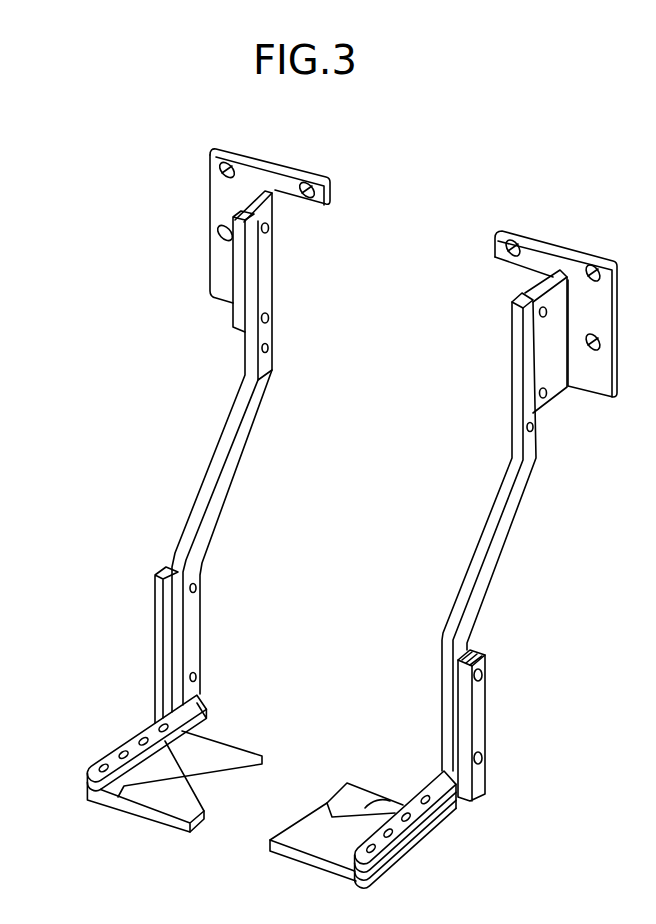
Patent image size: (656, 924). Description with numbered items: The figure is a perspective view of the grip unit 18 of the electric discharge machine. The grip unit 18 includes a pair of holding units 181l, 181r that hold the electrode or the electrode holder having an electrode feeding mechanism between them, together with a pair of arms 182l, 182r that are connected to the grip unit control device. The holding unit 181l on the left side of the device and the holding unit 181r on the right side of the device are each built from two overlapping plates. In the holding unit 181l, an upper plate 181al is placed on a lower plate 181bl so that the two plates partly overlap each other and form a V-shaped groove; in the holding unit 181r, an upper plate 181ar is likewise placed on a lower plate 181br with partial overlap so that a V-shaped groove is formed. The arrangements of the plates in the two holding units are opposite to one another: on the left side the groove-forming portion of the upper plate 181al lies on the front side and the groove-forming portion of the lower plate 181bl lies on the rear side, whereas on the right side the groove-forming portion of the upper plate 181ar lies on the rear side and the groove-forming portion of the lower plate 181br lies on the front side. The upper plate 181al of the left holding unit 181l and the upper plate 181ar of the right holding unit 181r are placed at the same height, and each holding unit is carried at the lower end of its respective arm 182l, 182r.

The grip unit 18 is at (126, 302).
The arm 182r is at (230, 467).
The arm 182l is at (492, 522).
The holding unit 181r is at (177, 708).
The holding unit 181l is at (437, 797).
The upper plate 181ar is at (178, 753).
The lower plate 181br is at (163, 797).
The upper plate 181al is at (393, 858).
The lower plate 181bl is at (410, 822).